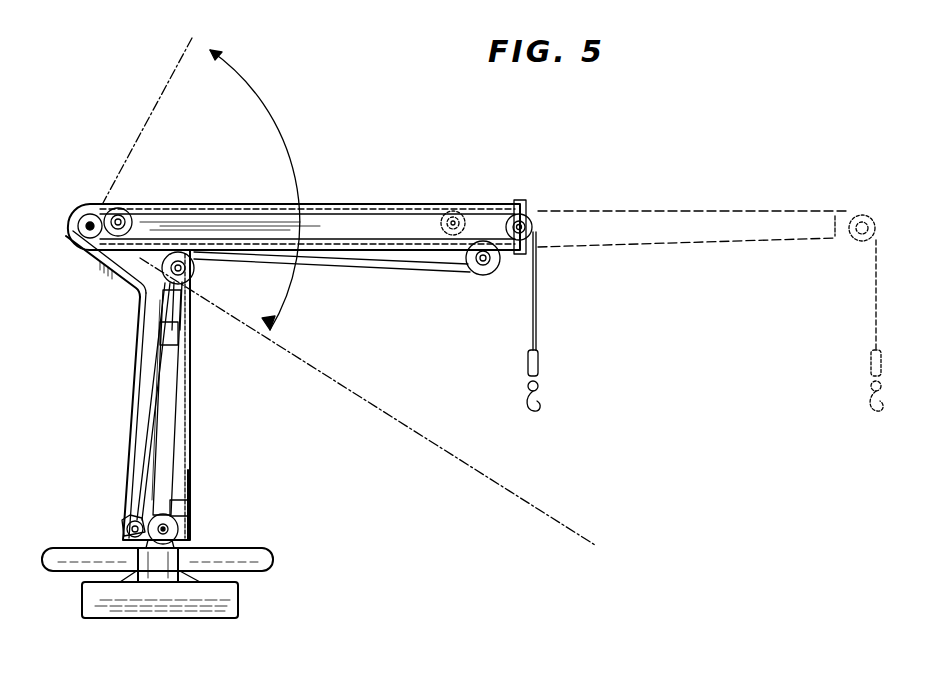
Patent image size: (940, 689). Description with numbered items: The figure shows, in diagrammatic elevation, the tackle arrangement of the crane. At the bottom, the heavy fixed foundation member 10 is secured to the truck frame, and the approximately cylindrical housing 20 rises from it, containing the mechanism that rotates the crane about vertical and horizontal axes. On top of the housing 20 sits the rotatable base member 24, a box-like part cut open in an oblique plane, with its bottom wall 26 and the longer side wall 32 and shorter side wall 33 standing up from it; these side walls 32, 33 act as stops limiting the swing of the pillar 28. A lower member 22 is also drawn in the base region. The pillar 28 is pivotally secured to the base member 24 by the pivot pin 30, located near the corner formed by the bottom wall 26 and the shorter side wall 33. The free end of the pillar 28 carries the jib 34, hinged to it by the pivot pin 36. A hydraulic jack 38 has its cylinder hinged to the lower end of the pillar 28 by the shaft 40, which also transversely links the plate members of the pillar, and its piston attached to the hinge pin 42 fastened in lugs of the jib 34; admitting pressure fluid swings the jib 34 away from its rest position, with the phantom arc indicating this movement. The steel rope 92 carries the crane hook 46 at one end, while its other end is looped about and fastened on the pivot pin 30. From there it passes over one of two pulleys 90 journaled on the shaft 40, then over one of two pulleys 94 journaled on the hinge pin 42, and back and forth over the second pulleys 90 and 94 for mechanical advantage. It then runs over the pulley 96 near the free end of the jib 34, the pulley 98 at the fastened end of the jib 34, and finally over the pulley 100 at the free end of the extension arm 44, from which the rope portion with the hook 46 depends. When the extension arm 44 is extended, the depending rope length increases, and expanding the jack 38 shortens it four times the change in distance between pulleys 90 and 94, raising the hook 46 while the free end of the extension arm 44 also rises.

The foundation member 10 is at (240, 602).
The housing 20 is at (164, 580).
The base plate 22 is at (262, 557).
The base member 24 is at (205, 462).
The bottom wall 26 is at (194, 544).
The pillar 28 is at (133, 363).
The pivot pin 30 is at (122, 530).
The longer side wall 32 is at (194, 478).
The shorter side wall 33 is at (120, 518).
The jib 34 is at (333, 205).
The pivot pin 36 is at (72, 222).
The hydraulic jack 38 is at (190, 372).
The shaft 40 is at (178, 528).
The hinge pin 42 is at (195, 274).
The extension arm 44 is at (316, 250).
The crane hook 46 is at (543, 405).
The pulleys 90 is at (186, 512).
The steel rope 92 is at (222, 207).
The pulleys 94 is at (136, 290).
The pulley 96 is at (484, 276).
The pulley 98 is at (123, 208).
The pulley 100 is at (528, 216).